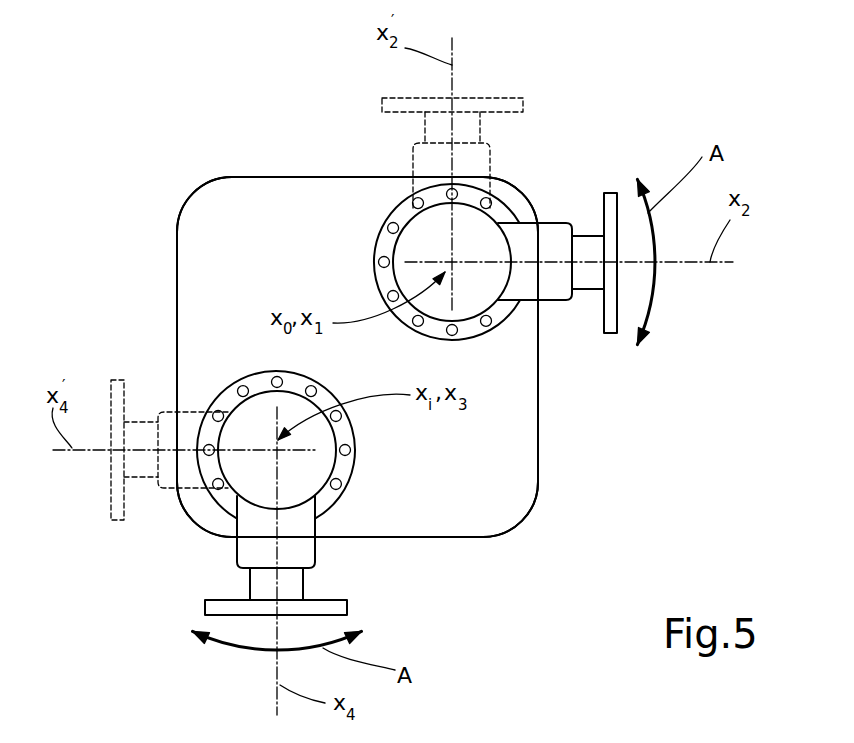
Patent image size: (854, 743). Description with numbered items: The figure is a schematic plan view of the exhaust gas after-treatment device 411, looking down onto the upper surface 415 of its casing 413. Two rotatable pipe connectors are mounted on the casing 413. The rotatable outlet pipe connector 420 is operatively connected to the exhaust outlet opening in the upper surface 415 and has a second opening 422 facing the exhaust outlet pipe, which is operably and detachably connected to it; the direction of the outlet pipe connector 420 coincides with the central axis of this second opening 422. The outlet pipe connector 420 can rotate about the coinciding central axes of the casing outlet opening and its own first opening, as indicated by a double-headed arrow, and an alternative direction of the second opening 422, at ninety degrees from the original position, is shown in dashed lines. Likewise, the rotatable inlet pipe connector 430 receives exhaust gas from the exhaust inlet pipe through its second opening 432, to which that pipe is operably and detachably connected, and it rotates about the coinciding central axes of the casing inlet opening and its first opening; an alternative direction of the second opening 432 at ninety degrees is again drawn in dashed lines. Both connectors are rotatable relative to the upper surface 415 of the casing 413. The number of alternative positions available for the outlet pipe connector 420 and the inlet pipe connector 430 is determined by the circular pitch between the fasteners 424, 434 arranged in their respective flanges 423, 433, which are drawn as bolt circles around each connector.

The exhaust gas after-treatment device 411 is at (165, 167).
The casing 413 is at (165, 268).
The upper surface 415 is at (448, 471).
The rotatable outlet pipe connector 420 is at (507, 229).
The second opening 422 is at (625, 287).
The flange 423 is at (398, 202).
The fasteners 424 is at (373, 260).
The rotatable inlet pipe connector 430 is at (279, 541).
The second opening 432 is at (248, 620).
The flange 433 is at (327, 502).
The fasteners 434 is at (351, 452).